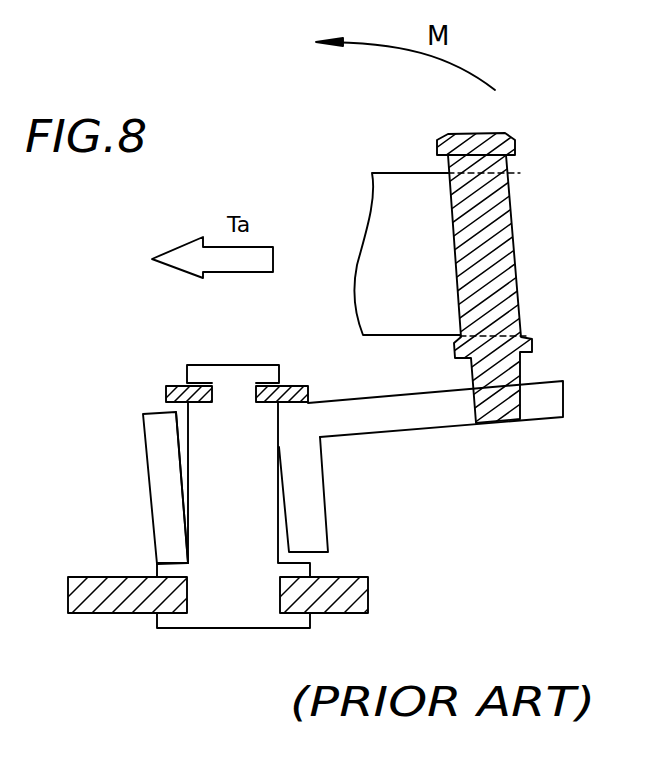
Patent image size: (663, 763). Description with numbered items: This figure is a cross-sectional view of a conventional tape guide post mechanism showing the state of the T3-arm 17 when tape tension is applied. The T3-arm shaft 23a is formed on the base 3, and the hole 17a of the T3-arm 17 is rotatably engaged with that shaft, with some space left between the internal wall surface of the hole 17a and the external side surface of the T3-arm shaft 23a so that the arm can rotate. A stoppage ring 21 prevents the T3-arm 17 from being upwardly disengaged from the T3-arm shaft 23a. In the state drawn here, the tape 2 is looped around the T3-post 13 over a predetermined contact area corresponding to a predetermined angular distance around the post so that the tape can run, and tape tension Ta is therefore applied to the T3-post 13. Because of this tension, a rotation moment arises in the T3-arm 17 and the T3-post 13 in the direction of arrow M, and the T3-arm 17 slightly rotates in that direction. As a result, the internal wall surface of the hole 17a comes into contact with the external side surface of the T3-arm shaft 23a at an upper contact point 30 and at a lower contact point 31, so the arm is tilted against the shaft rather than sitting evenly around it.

The tape 2 is at (405, 198).
The T3-post 13 is at (520, 281).
The T3-arm 17 is at (405, 422).
The hole 17a is at (292, 529).
The stoppage ring 21 is at (175, 387).
The T3-arm shaft 23a is at (210, 456).
The upper contact point 30 is at (278, 409).
The lower contact point 31 is at (186, 558).
The base 3 is at (340, 598).